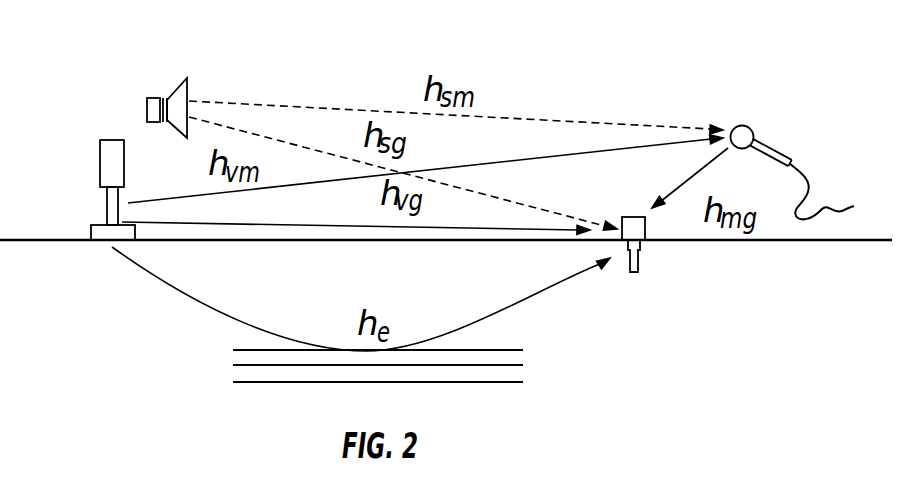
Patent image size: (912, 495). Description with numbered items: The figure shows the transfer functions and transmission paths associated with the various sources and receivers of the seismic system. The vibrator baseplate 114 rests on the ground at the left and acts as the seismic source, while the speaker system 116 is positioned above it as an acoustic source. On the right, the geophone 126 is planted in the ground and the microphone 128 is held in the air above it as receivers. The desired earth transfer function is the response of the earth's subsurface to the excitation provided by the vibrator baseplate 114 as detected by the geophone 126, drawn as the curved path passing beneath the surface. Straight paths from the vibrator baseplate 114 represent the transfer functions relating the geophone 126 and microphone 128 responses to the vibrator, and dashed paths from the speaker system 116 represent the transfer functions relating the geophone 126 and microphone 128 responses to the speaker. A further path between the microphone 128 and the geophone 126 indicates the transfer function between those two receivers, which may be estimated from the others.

The vibrator baseplate 114 is at (75, 190).
The speaker system 116 is at (142, 87).
The geophone 126 is at (667, 257).
The microphone 128 is at (793, 149).